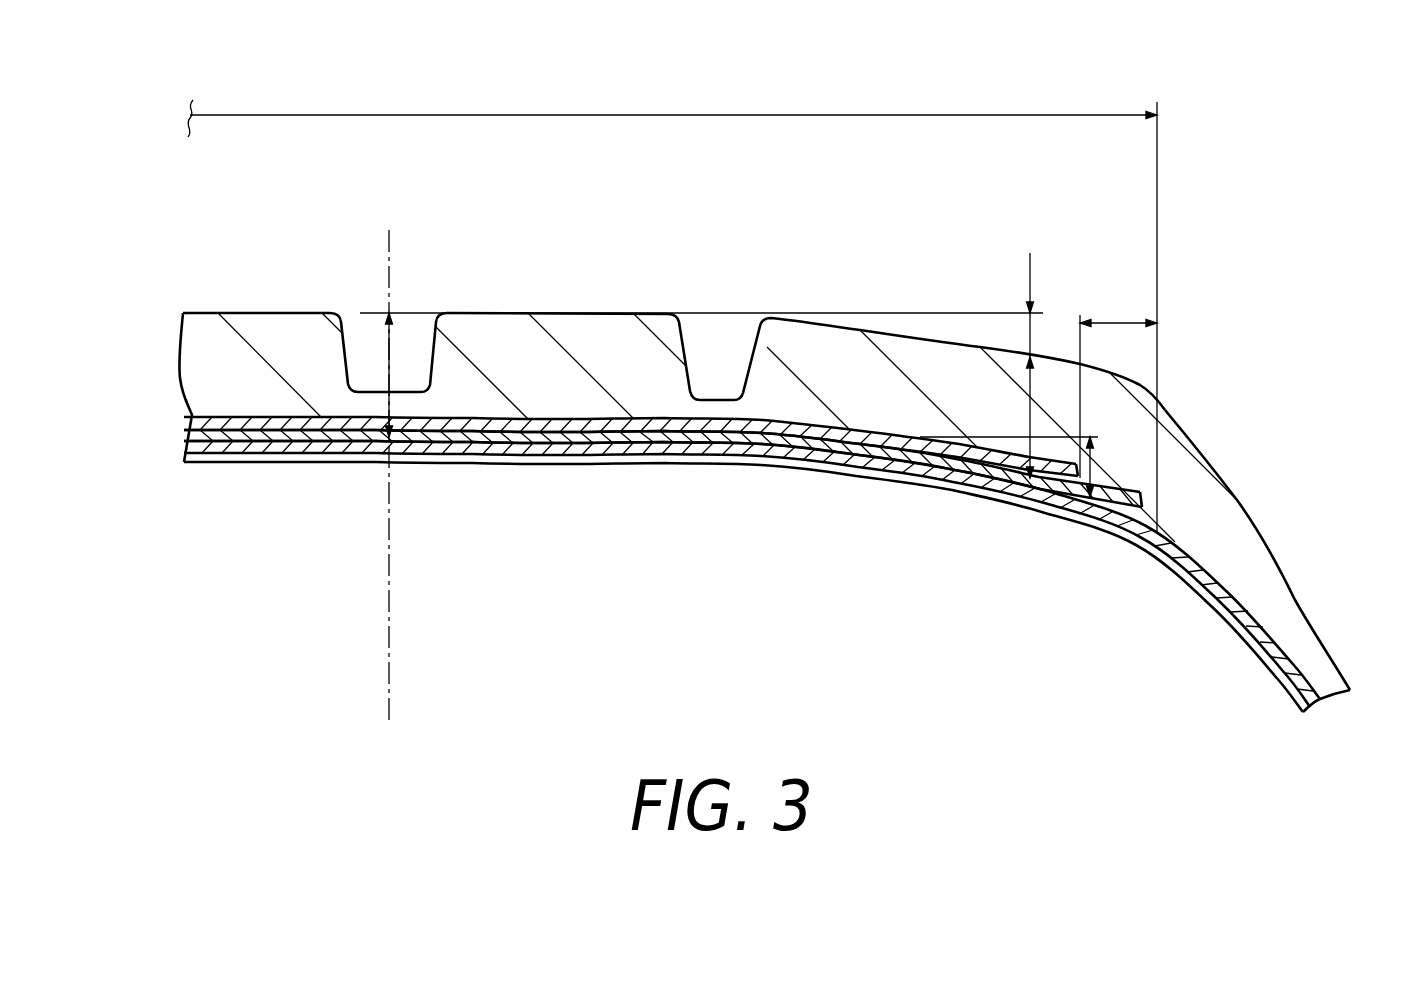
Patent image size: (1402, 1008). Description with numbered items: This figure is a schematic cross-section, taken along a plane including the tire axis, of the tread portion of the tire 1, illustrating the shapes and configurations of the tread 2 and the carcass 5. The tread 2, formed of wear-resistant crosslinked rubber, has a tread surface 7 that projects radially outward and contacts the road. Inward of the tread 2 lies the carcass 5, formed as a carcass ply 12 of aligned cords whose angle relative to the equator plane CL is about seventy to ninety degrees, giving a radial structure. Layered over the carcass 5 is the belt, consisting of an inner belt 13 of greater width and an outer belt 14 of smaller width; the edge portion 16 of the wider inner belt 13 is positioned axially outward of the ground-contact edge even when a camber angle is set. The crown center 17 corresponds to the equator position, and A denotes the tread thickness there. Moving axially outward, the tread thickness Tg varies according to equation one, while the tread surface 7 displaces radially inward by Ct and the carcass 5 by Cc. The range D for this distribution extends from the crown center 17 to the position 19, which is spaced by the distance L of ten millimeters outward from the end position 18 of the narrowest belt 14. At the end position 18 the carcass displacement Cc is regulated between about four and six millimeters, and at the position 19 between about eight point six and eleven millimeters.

The tire 1 is at (1311, 146).
The tread 2 is at (200, 372).
The carcass 5 is at (747, 578).
The tread surface 7 is at (249, 313).
The carcass ply 12 is at (502, 445).
The inner belt 13 is at (270, 437).
The outer belt 14 is at (212, 425).
The edge portion of the inner belt 16 is at (1142, 500).
The crown center 17 is at (392, 311).
The end position of the belt 18 is at (1082, 477).
The position distant by 10 mm from the belt end 19 is at (1168, 532).
The thickness of the tread at the crown center A is at (383, 372).
The range for y D is at (672, 307).
The distance L is at (1118, 385).
The thickness of the tread Tg is at (1030, 413).
The displacement of the tread surface Ct is at (1030, 332).
The displacement of the carcass Cc is at (1092, 460).
The equator plane CL is at (390, 650).